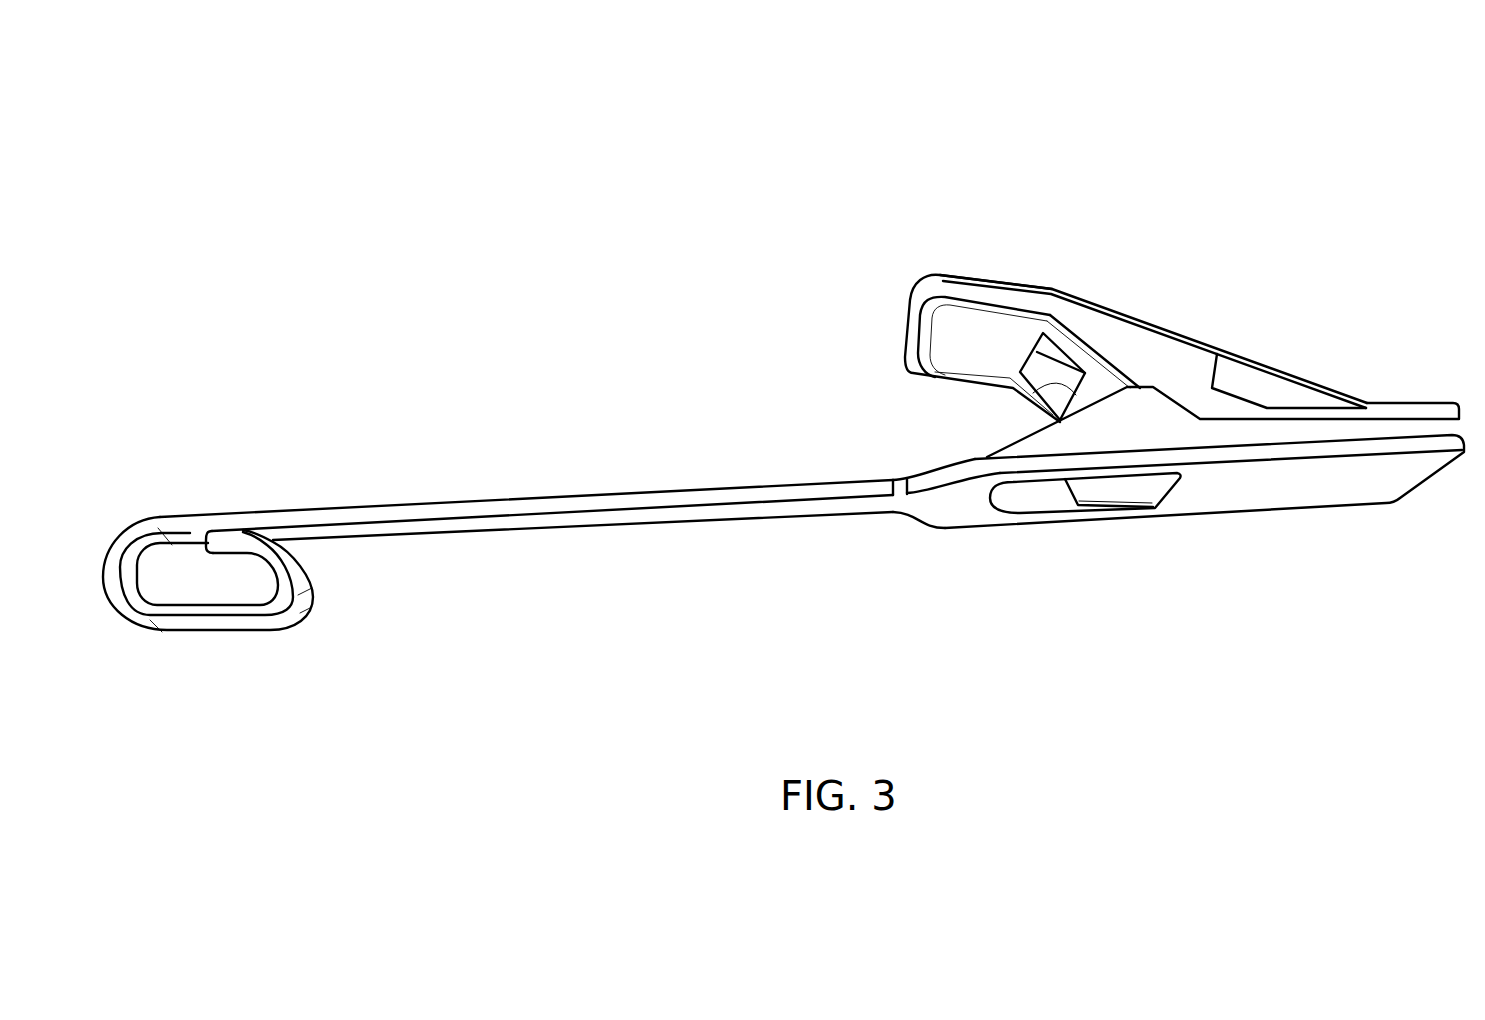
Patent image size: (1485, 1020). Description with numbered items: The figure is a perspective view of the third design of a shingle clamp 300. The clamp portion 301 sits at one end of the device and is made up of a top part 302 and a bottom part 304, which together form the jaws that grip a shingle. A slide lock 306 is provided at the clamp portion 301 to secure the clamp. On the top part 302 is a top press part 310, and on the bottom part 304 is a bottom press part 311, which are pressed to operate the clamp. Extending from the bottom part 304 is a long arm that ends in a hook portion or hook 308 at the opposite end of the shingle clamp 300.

The clip assembly 300 is at (1315, 96).
The clamp portion 301 is at (1370, 430).
The top part 302 is at (1167, 337).
The bottom part 304 is at (1229, 496).
The slide lock 306 is at (1037, 392).
The hook portion 308 is at (199, 625).
The top press part 310 is at (1005, 293).
The bottom press part 311 is at (963, 507).